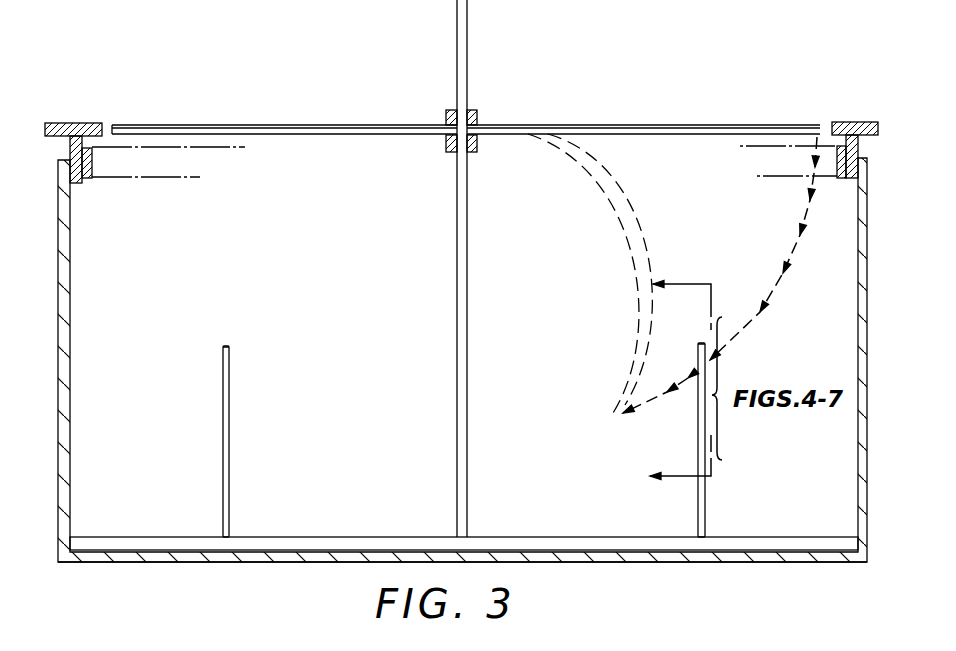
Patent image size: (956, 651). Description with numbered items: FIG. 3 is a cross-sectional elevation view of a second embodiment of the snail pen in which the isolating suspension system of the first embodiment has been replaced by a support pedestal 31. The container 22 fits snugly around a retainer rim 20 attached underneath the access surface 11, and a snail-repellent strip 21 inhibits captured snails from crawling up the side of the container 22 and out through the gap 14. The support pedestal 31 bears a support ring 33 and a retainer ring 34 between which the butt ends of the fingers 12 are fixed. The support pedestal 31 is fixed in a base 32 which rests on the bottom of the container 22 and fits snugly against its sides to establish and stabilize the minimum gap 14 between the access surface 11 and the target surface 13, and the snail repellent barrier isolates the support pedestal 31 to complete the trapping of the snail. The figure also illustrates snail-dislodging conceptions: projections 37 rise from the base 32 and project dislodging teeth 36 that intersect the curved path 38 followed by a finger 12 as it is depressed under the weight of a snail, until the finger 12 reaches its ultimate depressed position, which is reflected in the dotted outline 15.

The access surface 11 is at (58, 122).
The fingers 12 is at (260, 124).
The target surface 13 is at (125, 124).
The gap 14 is at (827, 123).
The dotted outline 15 is at (632, 262).
The retainer rim 20 is at (70, 150).
The snail-repellent strip 21 is at (92, 178).
The container 22 is at (203, 562).
The support pedestal 31 is at (456, 330).
The base 32 is at (522, 540).
The support ring 33 is at (450, 151).
The retainer ring 34 is at (472, 111).
The dislodging teeth 36 is at (228, 346).
The projections 37 is at (230, 440).
The curved path 38 is at (790, 255).